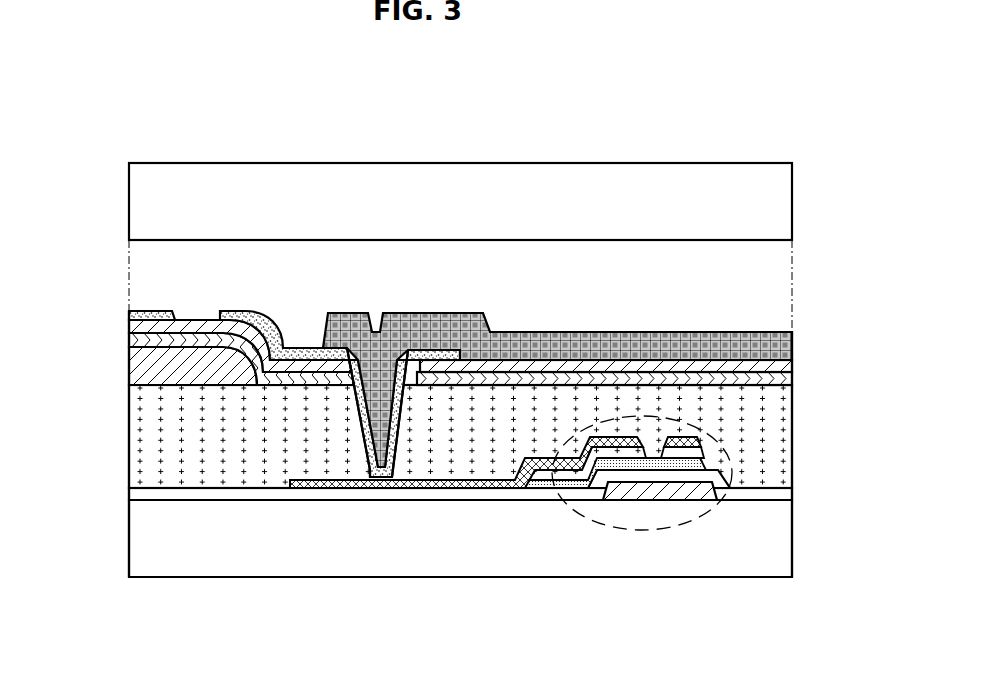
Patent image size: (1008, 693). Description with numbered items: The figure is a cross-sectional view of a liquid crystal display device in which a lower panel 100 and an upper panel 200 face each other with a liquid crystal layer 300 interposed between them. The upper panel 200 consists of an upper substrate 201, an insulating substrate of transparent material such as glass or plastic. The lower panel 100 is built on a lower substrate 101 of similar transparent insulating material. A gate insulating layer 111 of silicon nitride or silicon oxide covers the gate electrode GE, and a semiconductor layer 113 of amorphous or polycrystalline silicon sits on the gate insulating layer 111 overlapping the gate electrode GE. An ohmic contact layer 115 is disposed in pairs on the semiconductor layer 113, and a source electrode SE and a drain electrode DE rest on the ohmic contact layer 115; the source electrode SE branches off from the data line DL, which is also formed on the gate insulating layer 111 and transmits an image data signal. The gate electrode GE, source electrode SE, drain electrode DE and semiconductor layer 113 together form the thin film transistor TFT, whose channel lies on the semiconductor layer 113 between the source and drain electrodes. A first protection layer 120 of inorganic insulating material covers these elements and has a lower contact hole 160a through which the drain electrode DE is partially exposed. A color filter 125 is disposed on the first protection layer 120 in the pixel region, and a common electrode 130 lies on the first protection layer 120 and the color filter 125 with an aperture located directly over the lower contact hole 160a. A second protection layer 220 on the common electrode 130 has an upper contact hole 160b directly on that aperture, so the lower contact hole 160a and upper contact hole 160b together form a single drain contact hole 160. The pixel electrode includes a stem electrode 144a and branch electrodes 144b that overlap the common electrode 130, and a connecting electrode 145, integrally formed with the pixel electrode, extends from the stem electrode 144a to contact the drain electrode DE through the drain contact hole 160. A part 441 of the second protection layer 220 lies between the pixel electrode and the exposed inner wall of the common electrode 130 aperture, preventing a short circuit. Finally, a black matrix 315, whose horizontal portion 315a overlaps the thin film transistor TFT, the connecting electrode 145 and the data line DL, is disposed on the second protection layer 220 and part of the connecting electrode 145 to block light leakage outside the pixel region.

The upper substrate 201 is at (150, 203).
The upper panel 200 is at (459, 201).
The liquid crystal layer 300 is at (770, 286).
The lower panel 100 is at (453, 394).
The lower substrate 101 is at (150, 538).
The gate insulating layer 111 is at (150, 495).
The first protection layer 120 is at (150, 438).
The color filter 125 is at (145, 365).
The common electrode 130 is at (140, 338).
The second protection layer 220 is at (140, 328).
The stem electrode 144a is at (340, 296).
The branch electrode 144b is at (160, 313).
The connecting electrode 145 is at (309, 348).
The part of the second protection layer 441 is at (350, 388).
The black matrix 315 is at (557, 291).
The horizontal portion 315a is at (700, 345).
The drain contact hole 160 is at (368, 510).
The lower contact hole 160a is at (381, 445).
The upper contact hole 160b is at (370, 462).
The thin film transistor TFT is at (516, 538).
The gate electrode GE is at (640, 483).
The semiconductor layer 113 is at (575, 489).
The ohmic contact layer 115 is at (560, 476).
The source electrode SE is at (670, 459).
The drain electrode DE is at (533, 455).
The data line DL is at (687, 448).